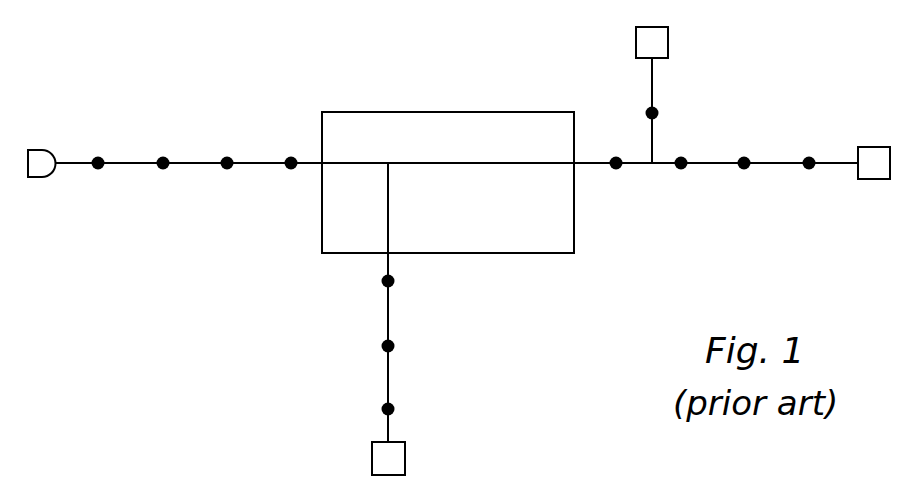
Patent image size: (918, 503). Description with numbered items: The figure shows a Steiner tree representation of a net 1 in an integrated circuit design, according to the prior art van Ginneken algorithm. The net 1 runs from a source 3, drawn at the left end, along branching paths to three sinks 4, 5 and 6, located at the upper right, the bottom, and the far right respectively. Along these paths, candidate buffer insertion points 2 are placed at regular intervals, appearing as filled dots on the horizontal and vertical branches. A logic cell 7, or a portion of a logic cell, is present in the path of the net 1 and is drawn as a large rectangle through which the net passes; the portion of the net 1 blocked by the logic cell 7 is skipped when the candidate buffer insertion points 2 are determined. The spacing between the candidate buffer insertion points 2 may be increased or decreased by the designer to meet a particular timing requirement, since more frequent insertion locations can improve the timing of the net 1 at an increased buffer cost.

The net 1 is at (447, 50).
The candidate buffer insertion points 2 is at (289, 168).
The source 3 is at (50, 150).
The sink 4 is at (660, 58).
The sink 5 is at (405, 452).
The sink 6 is at (856, 147).
The logic cell 7 is at (500, 253).